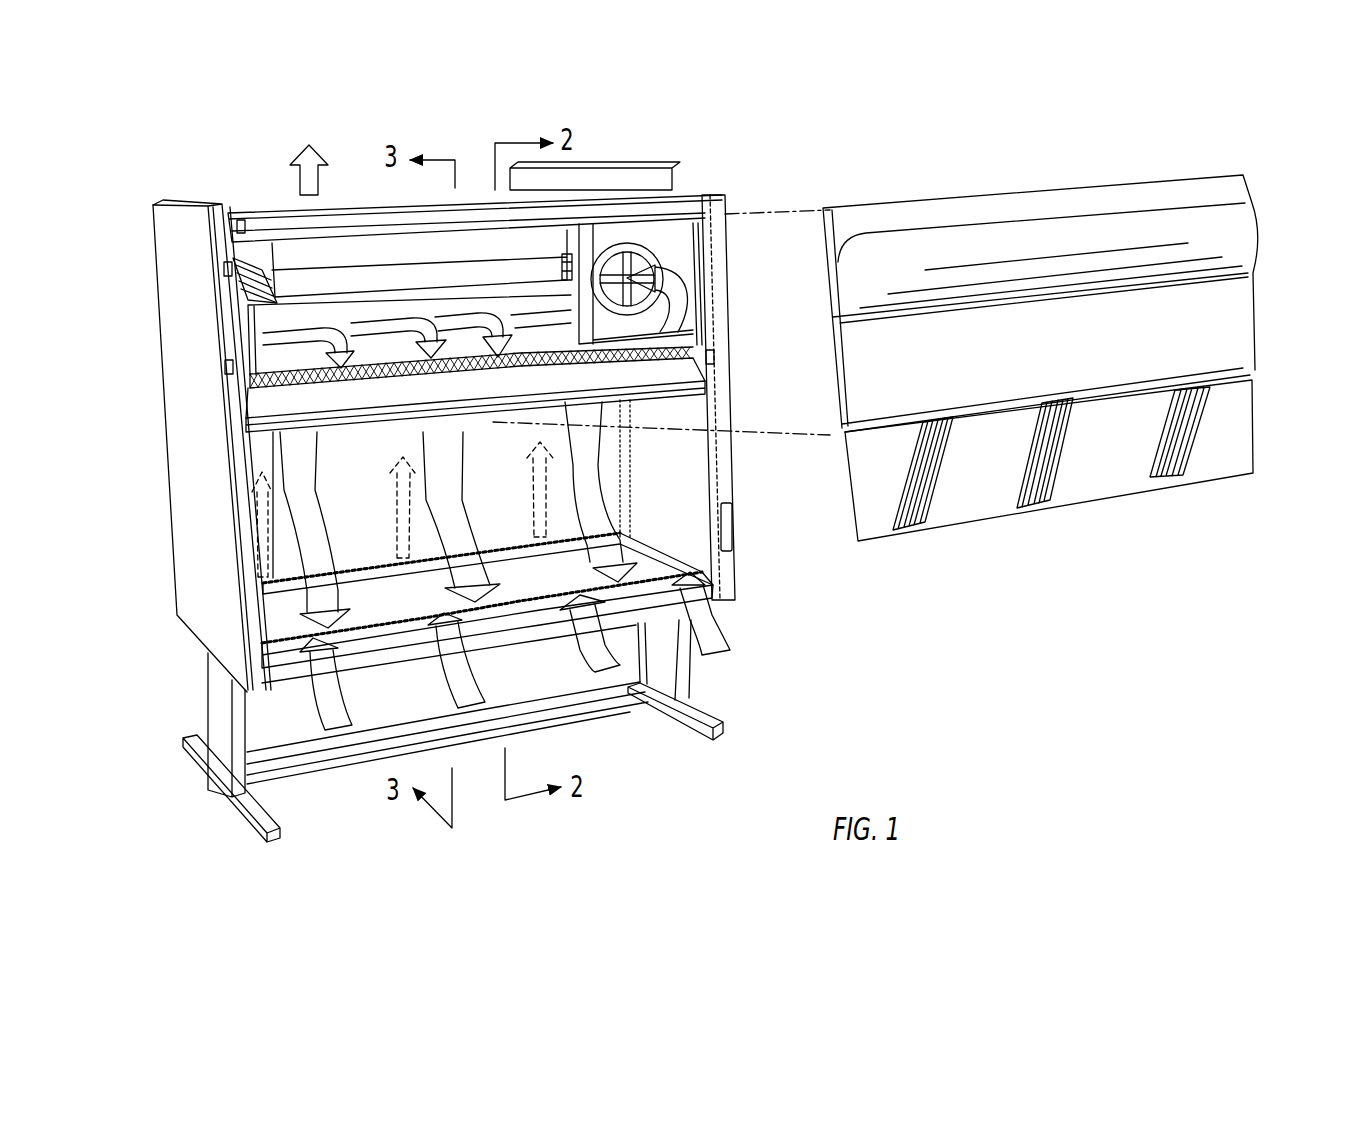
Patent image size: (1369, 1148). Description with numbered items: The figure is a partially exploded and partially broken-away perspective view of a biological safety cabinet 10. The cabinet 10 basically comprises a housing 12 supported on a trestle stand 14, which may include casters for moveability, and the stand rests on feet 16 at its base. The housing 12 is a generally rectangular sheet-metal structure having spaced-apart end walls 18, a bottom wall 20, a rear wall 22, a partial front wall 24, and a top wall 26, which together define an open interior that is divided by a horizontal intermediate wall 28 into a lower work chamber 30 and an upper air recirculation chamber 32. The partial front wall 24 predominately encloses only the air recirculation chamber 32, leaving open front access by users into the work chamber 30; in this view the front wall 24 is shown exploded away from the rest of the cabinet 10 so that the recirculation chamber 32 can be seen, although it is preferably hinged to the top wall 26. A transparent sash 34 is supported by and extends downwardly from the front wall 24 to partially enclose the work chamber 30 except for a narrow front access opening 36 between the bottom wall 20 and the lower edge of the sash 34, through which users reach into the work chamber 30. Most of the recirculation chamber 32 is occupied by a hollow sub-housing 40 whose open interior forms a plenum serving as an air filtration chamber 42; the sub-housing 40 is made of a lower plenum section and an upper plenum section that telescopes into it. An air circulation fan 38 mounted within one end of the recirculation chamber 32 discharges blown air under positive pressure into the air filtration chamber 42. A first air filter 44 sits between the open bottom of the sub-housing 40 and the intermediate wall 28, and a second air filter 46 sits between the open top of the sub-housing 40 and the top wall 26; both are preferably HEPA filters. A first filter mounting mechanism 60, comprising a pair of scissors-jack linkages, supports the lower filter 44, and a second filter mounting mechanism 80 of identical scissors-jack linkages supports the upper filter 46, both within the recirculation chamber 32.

The biological safety cabinet 10 is at (773, 578).
The housing 12 is at (200, 585).
The trestle stand 14 is at (220, 720).
The foot 16 is at (270, 835).
The end walls 18 is at (197, 463).
The bottom wall 20 is at (515, 587).
The rear wall 22 is at (350, 463).
The partial front wall 24 is at (1187, 330).
The top wall 26 is at (285, 215).
The horizontal intermediate wall 28 is at (700, 405).
The lower work chamber 30 is at (582, 477).
The upper air recirculation chamber 32 is at (687, 256).
The transparent sash 34 is at (1205, 433).
The front access opening 36 is at (260, 627).
The air circulation fan 38 is at (642, 252).
The sub-housing 40 is at (253, 353).
The air filtration chamber 42 is at (462, 277).
The first air filter 44 is at (290, 400).
The second air filter 46 is at (260, 285).
The first filter mounting mechanism 60 is at (224, 368).
The second filter mounting mechanism 80 is at (224, 268).